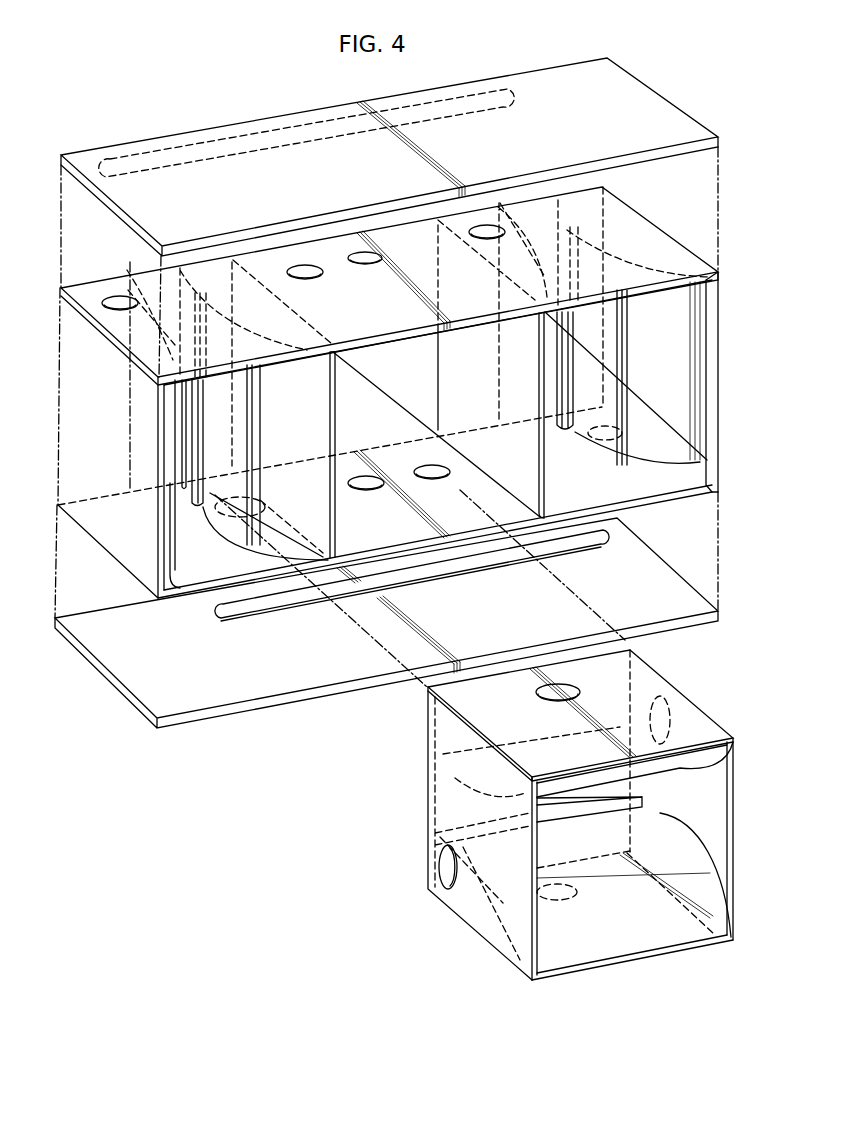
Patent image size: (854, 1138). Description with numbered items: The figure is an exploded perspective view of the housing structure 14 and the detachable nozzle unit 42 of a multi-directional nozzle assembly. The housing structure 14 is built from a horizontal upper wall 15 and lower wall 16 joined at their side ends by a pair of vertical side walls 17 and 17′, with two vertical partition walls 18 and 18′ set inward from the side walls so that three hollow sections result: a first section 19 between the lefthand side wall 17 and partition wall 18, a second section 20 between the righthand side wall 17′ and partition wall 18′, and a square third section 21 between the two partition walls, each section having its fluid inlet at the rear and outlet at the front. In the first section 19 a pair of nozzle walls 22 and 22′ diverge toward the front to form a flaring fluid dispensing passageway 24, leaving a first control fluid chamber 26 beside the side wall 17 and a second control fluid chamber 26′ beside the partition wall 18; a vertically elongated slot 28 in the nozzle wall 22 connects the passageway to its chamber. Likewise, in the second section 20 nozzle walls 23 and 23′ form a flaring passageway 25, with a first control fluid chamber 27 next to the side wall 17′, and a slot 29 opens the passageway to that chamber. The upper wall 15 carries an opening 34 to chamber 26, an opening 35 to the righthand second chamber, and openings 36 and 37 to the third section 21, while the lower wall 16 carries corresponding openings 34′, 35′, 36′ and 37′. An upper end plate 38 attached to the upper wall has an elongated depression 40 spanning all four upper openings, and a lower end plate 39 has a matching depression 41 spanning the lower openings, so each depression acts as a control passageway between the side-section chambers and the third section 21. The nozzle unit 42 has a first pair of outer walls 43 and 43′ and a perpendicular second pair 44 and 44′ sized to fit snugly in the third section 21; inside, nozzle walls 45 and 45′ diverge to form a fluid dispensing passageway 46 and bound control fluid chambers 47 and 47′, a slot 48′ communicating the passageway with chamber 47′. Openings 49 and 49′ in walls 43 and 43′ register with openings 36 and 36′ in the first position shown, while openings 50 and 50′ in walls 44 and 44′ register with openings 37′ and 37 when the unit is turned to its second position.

The housing structure 14 is at (728, 301).
The upper wall 15 is at (671, 292).
The lower wall 16 is at (650, 503).
The lefthand side wall 17 is at (68, 408).
The righthand side wall 17′ is at (712, 380).
The lefthand partition wall 18 is at (336, 417).
The righthand partition wall 18′ is at (493, 468).
The first section 19 is at (186, 576).
The second section 20 is at (602, 515).
The third section 21 is at (404, 531).
The nozzle wall 22 is at (174, 548).
The nozzle wall 22′ is at (265, 548).
The nozzle wall 23 is at (545, 500).
The nozzle wall 23′ is at (602, 470).
The fluid dispensing passageway 24 is at (178, 512).
The fluid dispensing passageway 25 is at (582, 469).
The first control fluid chamber 26 is at (128, 288).
The second control fluid chamber 26′ is at (306, 329).
The first control fluid chamber 27 is at (640, 232).
The vertically elongated slot 28 is at (203, 398).
The vertically elongated slot 29 is at (555, 330).
The opening 34 is at (108, 297).
The opening 34′ is at (258, 520).
The opening 35 is at (500, 232).
The opening 35′ is at (623, 415).
The opening 36 is at (371, 266).
The opening 36′ is at (364, 491).
The opening 37 is at (308, 276).
The opening 37′ is at (431, 482).
The upper end plate 38 is at (389, 155).
The lower end plate 39 is at (386, 626).
The elongated depression 40 is at (214, 145).
The elongated depression 41 is at (436, 582).
The detachable nozzle unit 42 is at (678, 665).
The outer wall 43 is at (652, 690).
The outer wall 43′ is at (634, 963).
The outer wall 44 is at (542, 975).
The outer wall 44′ is at (733, 918).
The nozzle wall 45 is at (712, 768).
The nozzle wall 45′ is at (713, 884).
The fluid dispensing passageway 46 is at (705, 813).
The control fluid chamber 47 is at (430, 742).
The control fluid chamber 47′ is at (478, 934).
The elongated slot 48′ is at (643, 818).
The opening 49 is at (554, 700).
The opening 49′ is at (566, 900).
The opening 50 is at (444, 873).
The opening 50′ is at (677, 725).